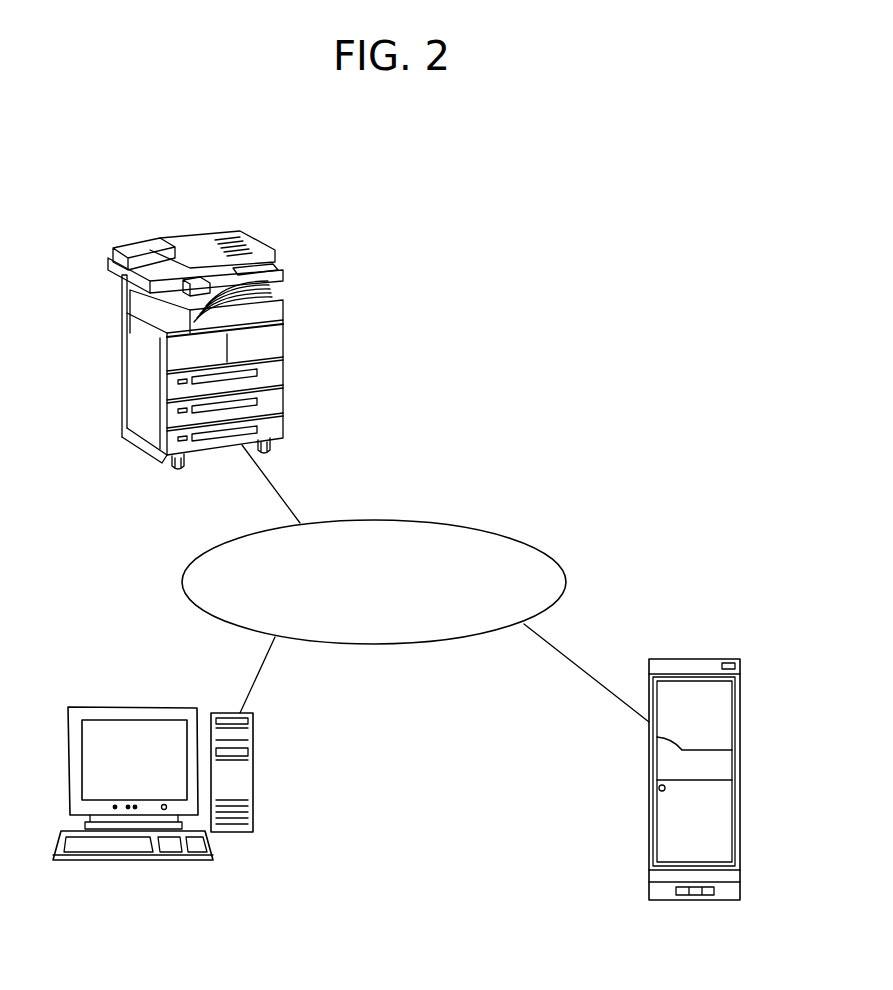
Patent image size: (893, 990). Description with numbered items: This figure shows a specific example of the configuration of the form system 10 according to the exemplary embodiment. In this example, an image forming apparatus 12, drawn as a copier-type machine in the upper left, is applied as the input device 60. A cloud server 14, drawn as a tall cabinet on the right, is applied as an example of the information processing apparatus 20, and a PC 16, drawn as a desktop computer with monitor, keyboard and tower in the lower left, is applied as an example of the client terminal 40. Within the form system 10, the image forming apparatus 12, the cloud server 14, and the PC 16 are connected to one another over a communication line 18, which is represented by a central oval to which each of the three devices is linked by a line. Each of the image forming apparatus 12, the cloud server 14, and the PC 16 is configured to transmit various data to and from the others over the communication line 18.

The form system 10 is at (495, 225).
The image forming apparatus 12 is at (192, 319).
The input device 60 is at (132, 244).
The cloud server 14 is at (694, 745).
The information processing apparatus 20 is at (702, 672).
The PC 16 is at (153, 742).
The client terminal 40 is at (108, 705).
The communication line 18 is at (568, 554).